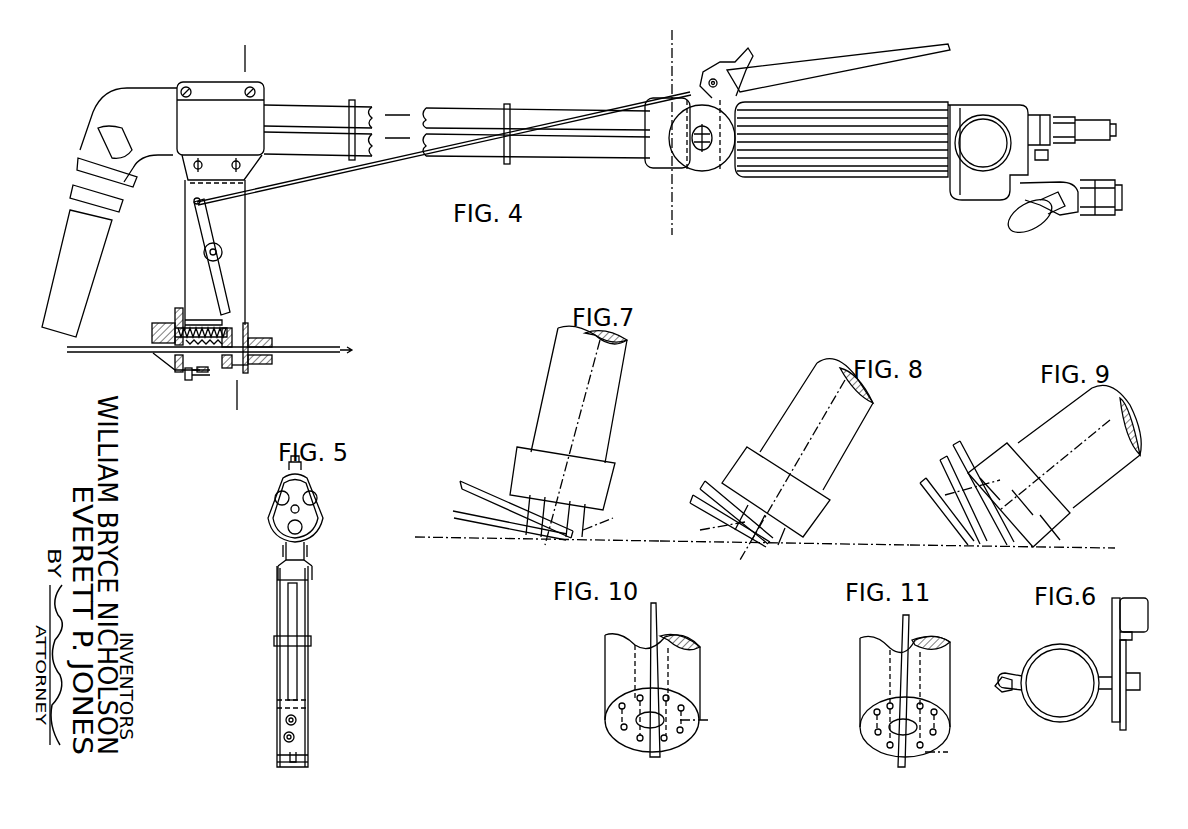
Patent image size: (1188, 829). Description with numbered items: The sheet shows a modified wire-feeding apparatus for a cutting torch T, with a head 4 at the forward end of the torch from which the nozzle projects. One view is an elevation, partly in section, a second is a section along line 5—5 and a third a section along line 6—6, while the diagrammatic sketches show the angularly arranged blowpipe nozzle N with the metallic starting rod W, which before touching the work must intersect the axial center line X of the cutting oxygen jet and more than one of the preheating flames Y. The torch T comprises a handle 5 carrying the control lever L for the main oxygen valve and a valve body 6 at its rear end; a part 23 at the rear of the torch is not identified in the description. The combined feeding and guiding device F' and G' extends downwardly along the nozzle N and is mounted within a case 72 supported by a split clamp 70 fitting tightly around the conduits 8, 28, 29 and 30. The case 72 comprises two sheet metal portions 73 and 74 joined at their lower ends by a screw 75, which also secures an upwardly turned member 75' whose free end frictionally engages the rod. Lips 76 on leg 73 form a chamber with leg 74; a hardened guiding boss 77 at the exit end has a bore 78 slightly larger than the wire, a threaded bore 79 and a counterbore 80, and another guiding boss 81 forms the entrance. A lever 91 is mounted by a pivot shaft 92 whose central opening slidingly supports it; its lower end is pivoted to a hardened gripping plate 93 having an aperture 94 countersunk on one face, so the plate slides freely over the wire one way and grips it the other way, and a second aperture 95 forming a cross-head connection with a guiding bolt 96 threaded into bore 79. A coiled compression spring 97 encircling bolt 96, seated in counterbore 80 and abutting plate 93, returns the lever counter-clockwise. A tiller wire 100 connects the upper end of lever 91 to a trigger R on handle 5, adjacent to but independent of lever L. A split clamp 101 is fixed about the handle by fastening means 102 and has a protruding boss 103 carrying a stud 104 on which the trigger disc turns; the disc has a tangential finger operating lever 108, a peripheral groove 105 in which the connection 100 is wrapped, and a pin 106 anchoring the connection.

In FIG. 4, the torch head 4 is at (1010, 112).
In FIG. 4, the handle 5 is at (252, 67).
In FIG. 4, the valve body 6 is at (664, 49).
In FIG. 4, the oxygen duct 8 is at (395, 110).
In FIG. 5, the oxygen duct 8 is at (318, 498).
In FIG. 4, the valve handle 23 is at (1052, 232).
In FIG. 4, the conduit 28 is at (402, 140).
In FIG. 5, the conduit 28 is at (290, 512).
In FIG. 4, the conduit 29 is at (325, 147).
In FIG. 5, the conduit 29 is at (287, 529).
In FIG. 4, the conduit 30 is at (310, 110).
In FIG. 5, the conduit 30 is at (274, 500).
In FIG. 4, the split clamp 70 is at (255, 108).
In FIG. 5, the split clamp 70 is at (312, 525).
In FIG. 4, the case 72 is at (247, 270).
In FIG. 4, the sheet metal portion 73 is at (184, 270).
In FIG. 5, the sheet metal portion 73 is at (309, 616).
In FIG. 4, the sheet metal portion 74 is at (189, 183).
In FIG. 5, the sheet metal portion 74 is at (276, 588).
In FIG. 4, the screw 75 is at (207, 386).
In FIG. 5, the screw 75 is at (304, 767).
In FIG. 4, the upwardly turned member 75' is at (167, 380).
In FIG. 5, the upwardly turned member 75' is at (275, 770).
In FIG. 4, the lips 76 is at (176, 310).
In FIG. 4, the guiding boss 77 is at (155, 324).
In FIG. 4, the bore 78 is at (156, 358).
In FIG. 4, the bore 79 is at (152, 332).
In FIG. 4, the counterbore 80 is at (188, 322).
In FIG. 4, the guiding boss 81 is at (280, 348).
In FIG. 4, the lever 91 is at (232, 212).
In FIG. 5, the lever 91 is at (299, 590).
In FIG. 4, the pivot shaft 92 is at (223, 252).
In FIG. 5, the pivot shaft 92 is at (312, 638).
In FIG. 4, the gripping plate 93 is at (249, 368).
In FIG. 5, the gripping plate 93 is at (300, 732).
In FIG. 4, the aperture 94 is at (220, 360).
In FIG. 5, the aperture 94 is at (283, 737).
In FIG. 4, the second aperture 95 is at (233, 326).
In FIG. 5, the second aperture 95 is at (297, 718).
In FIG. 4, the guiding bolt 96 is at (265, 340).
In FIG. 4, the coiled compression spring 97 is at (216, 332).
In FIG. 4, the tiller wire 100 is at (355, 170).
In FIG. 5, the tiller wire 100 is at (278, 578).
In FIG. 4, the split-clamp 101 is at (690, 168).
In FIG. 6, the split-clamp 101 is at (1046, 650).
In FIG. 6, the fastening means 102 is at (1006, 692).
In FIG. 6, the protruding boss 103 is at (1098, 706).
In FIG. 6, the stud 104 is at (1136, 674).
In FIG. 4, the groove 105 is at (660, 168).
In FIG. 6, the groove 105 is at (1126, 730).
In FIG. 4, the pin 106 is at (714, 78).
In FIG. 6, the pin 106 is at (1133, 636).
In FIG. 4, the finger operating lever 108 is at (742, 58).
In FIG. 6, the finger operating lever 108 is at (1150, 597).
In FIG. 4, the control lever L is at (836, 54).
In FIG. 4, the blowpipe nozzle N is at (104, 250).
In FIG. 7, the blowpipe nozzle N is at (618, 408).
In FIG. 8, the blowpipe nozzle N is at (855, 437).
In FIG. 9, the blowpipe nozzle N is at (1110, 477).
In FIG. 10, the blowpipe nozzle N is at (701, 665).
In FIG. 11, the blowpipe nozzle N is at (951, 664).
In FIG. 4, the trigger R is at (712, 160).
In FIG. 6, the trigger R is at (1110, 622).
In FIG. 4, the torch T is at (880, 186).
In FIG. 7, the starting rod W is at (482, 484).
In FIG. 8, the starting rod W is at (700, 486).
In FIG. 9, the starting rod W is at (950, 443).
In FIG. 10, the starting rod W is at (660, 613).
In FIG. 11, the starting rod W is at (910, 625).
In FIG. 7, the axial center line X is at (580, 393).
In FIG. 8, the axial center line X is at (825, 425).
In FIG. 9, the axial center line X is at (1070, 450).
In FIG. 7, the preheating flames Y is at (605, 520).
In FIG. 8, the preheating flames Y is at (714, 530).
In FIG. 9, the preheating flames Y is at (979, 483).
In FIG. 10, the preheating flames Y is at (699, 720).
In FIG. 11, the preheating flames Y is at (941, 753).
In FIG. 4, the feeding device F' is at (269, 228).
In FIG. 4, the guiding device G' is at (273, 384).